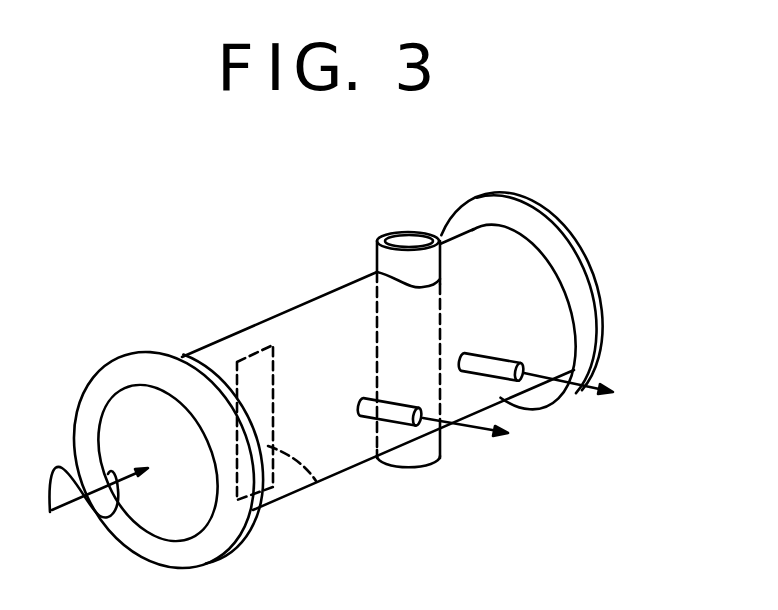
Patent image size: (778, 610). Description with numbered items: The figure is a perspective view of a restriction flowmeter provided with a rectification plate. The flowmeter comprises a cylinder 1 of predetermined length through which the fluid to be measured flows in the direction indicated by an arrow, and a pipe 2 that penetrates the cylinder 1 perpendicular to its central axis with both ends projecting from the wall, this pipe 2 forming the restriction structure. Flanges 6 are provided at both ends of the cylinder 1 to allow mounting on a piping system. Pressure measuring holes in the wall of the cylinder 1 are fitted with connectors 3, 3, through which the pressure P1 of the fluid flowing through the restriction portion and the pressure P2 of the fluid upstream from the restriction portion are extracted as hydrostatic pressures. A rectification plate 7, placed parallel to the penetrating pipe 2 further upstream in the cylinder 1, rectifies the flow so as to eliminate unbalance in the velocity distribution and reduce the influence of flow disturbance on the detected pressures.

The cylinder 1 is at (310, 314).
The pipe 2 is at (377, 258).
The connector 3 is at (403, 418).
The flange 6 is at (125, 360).
The rectification plate 7 is at (322, 492).
The pressure of the fluid flowing through the restriction portion P1 is at (593, 394).
The pressure of the fluid upstream from the restriction portion P2 is at (493, 435).